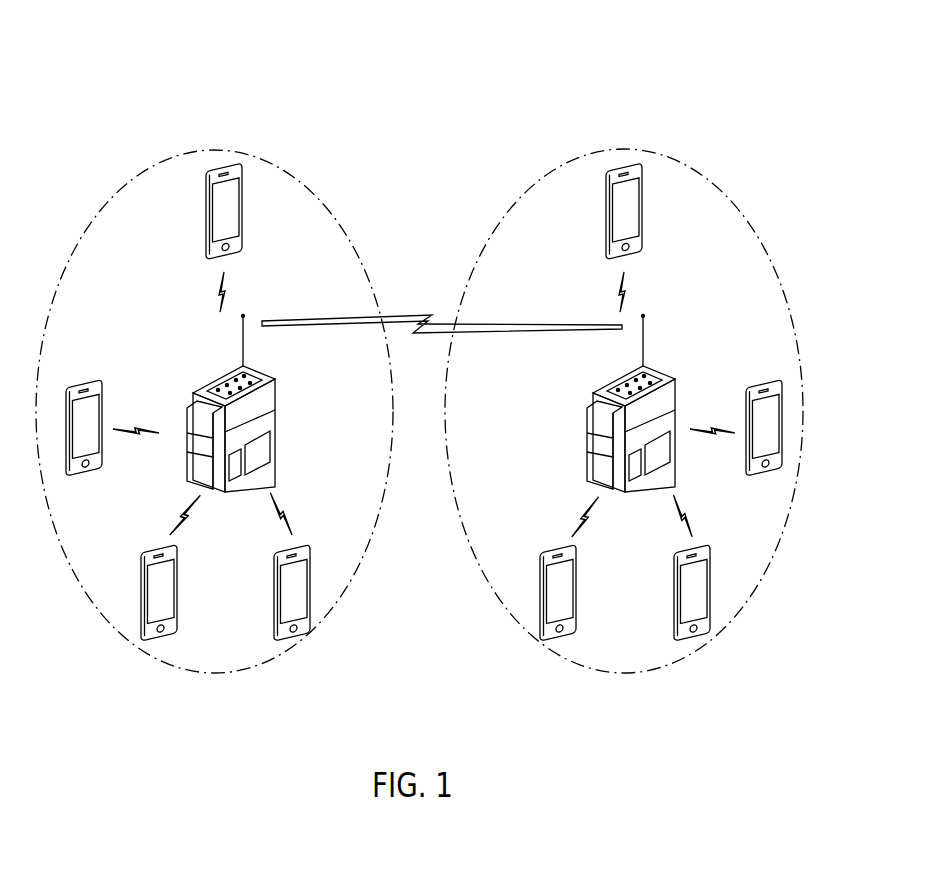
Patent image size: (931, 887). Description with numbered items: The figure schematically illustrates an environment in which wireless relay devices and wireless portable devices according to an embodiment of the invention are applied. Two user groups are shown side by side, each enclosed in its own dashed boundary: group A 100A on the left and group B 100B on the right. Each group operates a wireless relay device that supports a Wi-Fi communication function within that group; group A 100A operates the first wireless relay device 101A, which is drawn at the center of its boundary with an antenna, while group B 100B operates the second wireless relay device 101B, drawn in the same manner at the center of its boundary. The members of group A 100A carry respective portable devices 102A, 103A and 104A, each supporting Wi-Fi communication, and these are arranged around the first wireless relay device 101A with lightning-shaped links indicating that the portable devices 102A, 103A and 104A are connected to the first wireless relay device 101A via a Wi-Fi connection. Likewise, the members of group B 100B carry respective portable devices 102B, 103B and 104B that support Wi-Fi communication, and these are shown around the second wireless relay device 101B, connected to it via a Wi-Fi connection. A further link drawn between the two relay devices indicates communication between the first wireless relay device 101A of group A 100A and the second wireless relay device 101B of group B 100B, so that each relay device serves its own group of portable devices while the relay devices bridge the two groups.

The group A 100A is at (218, 112).
The group B 100B is at (625, 110).
The first wireless relay device 101A is at (257, 418).
The second wireless relay device 101B is at (587, 410).
The portable device 102A is at (105, 382).
The portable device 102B is at (752, 386).
The portable device 103A is at (152, 638).
The portable device 103B is at (688, 638).
The portable device 104A is at (287, 638).
The portable device 104B is at (550, 638).